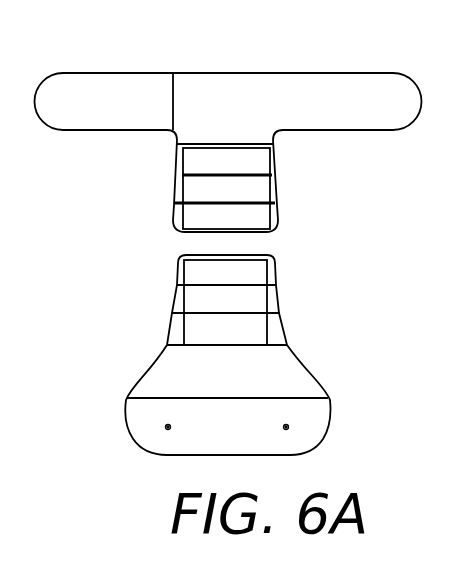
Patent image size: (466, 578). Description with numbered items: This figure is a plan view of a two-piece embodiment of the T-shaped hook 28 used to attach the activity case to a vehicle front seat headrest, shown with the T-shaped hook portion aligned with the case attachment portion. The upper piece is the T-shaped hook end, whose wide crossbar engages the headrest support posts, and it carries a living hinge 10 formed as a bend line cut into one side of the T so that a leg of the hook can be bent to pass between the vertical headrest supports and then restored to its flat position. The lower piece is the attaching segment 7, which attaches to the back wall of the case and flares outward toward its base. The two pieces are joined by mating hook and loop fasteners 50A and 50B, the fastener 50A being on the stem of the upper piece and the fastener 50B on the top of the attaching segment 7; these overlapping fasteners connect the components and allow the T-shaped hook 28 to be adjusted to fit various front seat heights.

The T-shaped hook 28 is at (87, 41).
The living hinge 10 is at (173, 102).
The hook and loop fastener 50A is at (255, 160).
The hook and loop fastener 50B is at (250, 272).
The attaching segment 7 is at (305, 412).